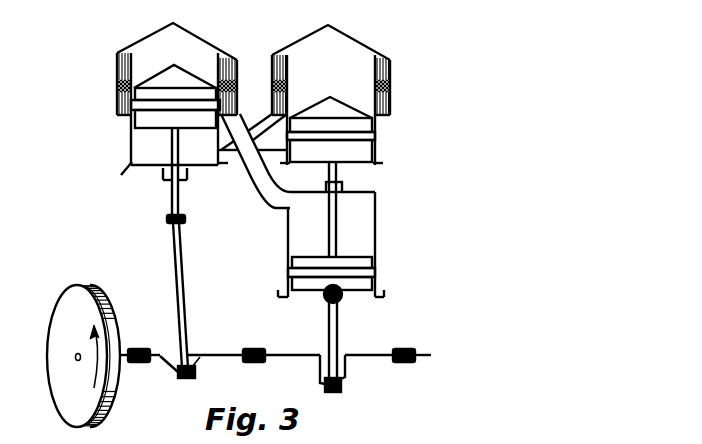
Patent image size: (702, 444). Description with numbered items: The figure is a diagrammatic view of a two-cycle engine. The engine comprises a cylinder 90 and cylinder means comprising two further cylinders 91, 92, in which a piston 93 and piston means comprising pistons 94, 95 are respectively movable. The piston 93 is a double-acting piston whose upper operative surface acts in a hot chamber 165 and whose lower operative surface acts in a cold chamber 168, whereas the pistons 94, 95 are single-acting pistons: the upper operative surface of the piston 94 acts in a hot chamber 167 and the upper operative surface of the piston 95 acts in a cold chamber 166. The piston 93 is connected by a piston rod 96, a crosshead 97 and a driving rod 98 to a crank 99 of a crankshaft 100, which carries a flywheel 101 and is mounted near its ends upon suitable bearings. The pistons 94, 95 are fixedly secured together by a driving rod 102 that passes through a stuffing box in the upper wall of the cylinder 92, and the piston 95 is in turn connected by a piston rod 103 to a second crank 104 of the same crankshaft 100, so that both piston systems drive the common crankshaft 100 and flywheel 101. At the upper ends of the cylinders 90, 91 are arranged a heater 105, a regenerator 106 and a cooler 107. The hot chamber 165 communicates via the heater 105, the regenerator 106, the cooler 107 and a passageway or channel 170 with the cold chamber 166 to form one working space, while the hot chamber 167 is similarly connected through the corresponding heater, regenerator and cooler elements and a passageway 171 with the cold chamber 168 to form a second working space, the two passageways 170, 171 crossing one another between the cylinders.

The cylinder 90 is at (131, 143).
The hot chamber 165 is at (198, 49).
The heater 105 is at (229, 60).
The regenerator 106 is at (234, 84).
The cooler 107 is at (234, 104).
The piston 93 is at (166, 126).
The piston rod 96 is at (178, 192).
The crosshead 97 is at (185, 219).
The driving rod 98 is at (182, 277).
The crank 99 is at (167, 364).
The cold chamber 168 is at (127, 168).
The passageway 170 is at (276, 184).
The passageway 171 is at (254, 132).
The hot chamber 167 is at (353, 50).
The piston 94 is at (362, 124).
The cylinder 91 is at (376, 135).
The driving rod 102 is at (337, 170).
The cylinder 92 is at (370, 214).
The cold chamber 166 is at (366, 235).
The piston 95 is at (368, 289).
The piston rod 103 is at (336, 326).
The crank 104 is at (346, 374).
The crankshaft 100 is at (293, 361).
The flywheel 101 is at (67, 397).